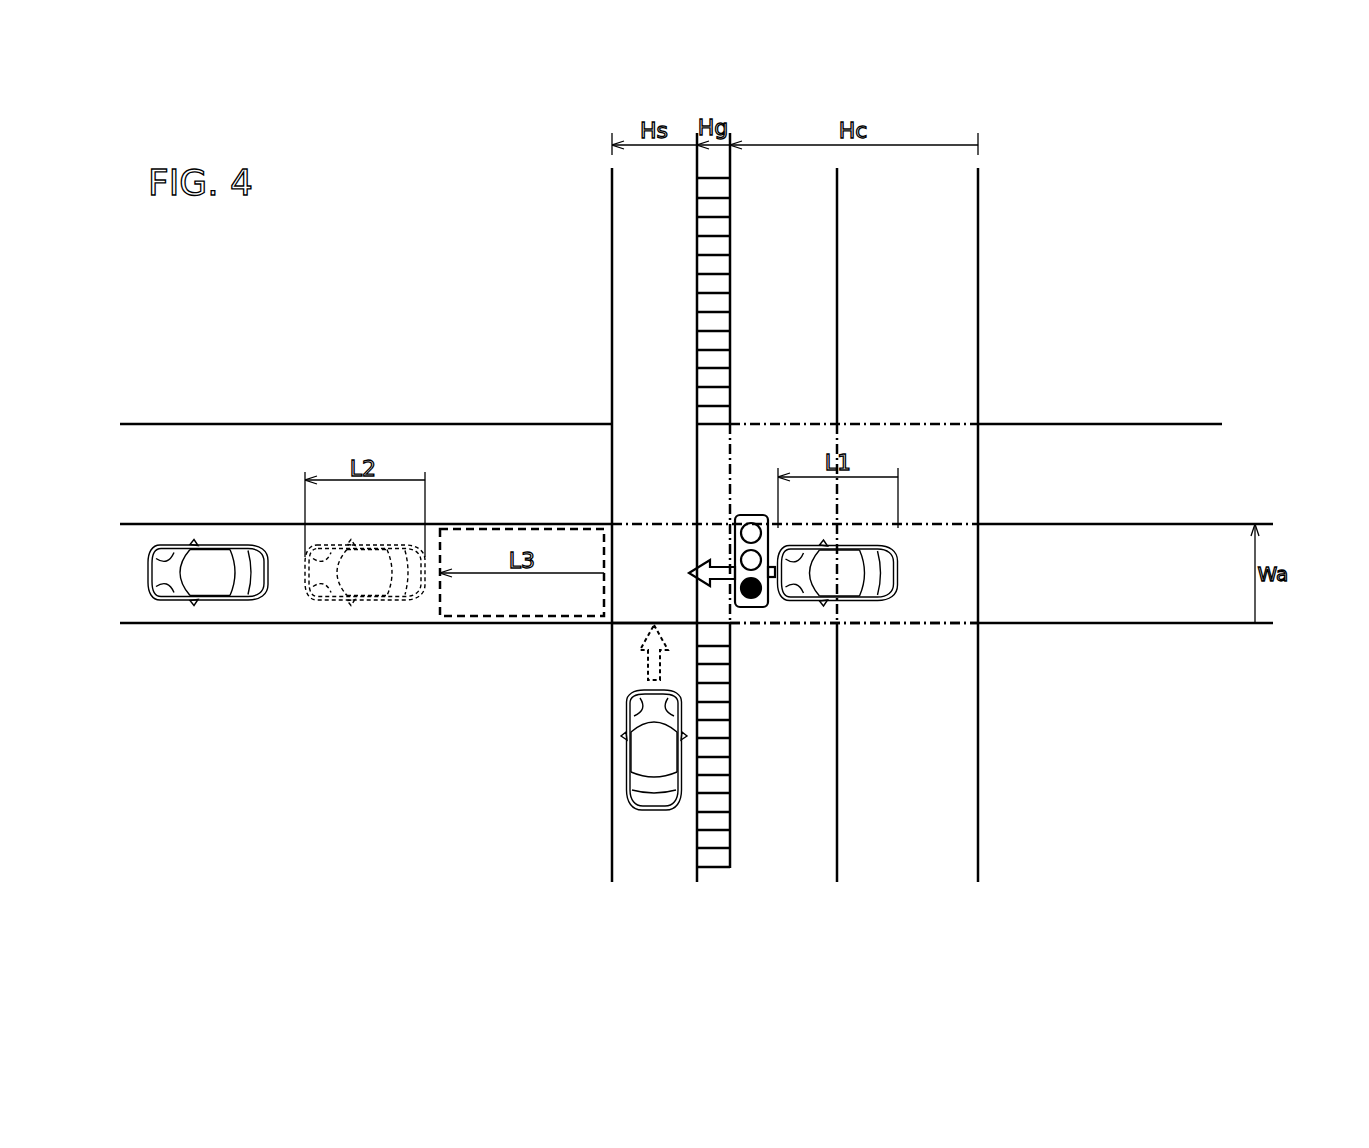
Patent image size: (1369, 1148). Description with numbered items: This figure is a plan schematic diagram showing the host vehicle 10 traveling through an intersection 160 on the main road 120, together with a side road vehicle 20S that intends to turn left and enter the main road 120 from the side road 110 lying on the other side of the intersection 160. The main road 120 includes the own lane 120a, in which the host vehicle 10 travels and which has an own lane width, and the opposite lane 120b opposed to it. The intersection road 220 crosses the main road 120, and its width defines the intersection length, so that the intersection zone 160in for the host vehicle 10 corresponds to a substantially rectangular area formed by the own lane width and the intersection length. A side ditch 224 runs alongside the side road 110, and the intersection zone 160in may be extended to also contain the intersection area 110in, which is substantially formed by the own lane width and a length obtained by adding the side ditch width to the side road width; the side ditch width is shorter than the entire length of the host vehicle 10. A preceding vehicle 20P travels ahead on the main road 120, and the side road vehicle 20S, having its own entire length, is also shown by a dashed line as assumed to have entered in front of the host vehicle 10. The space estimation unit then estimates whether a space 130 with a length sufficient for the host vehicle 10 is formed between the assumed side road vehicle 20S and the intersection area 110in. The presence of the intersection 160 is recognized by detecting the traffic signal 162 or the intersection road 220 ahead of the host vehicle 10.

The host vehicle 10 is at (898, 573).
The preceding vehicle 20P is at (212, 598).
The side road vehicle 20S is at (368, 600).
The side road 110 is at (647, 855).
The intersection area 110in is at (660, 590).
The main road 120 is at (696, 471).
The own lane 120a is at (277, 543).
The opposite lane 120b is at (208, 457).
The space 130 is at (470, 543).
The intersection 160 is at (1000, 669).
The intersection zone 160in is at (918, 600).
The traffic signal 162 is at (751, 515).
The intersection road 220 is at (946, 777).
The side ditch 224 is at (712, 787).